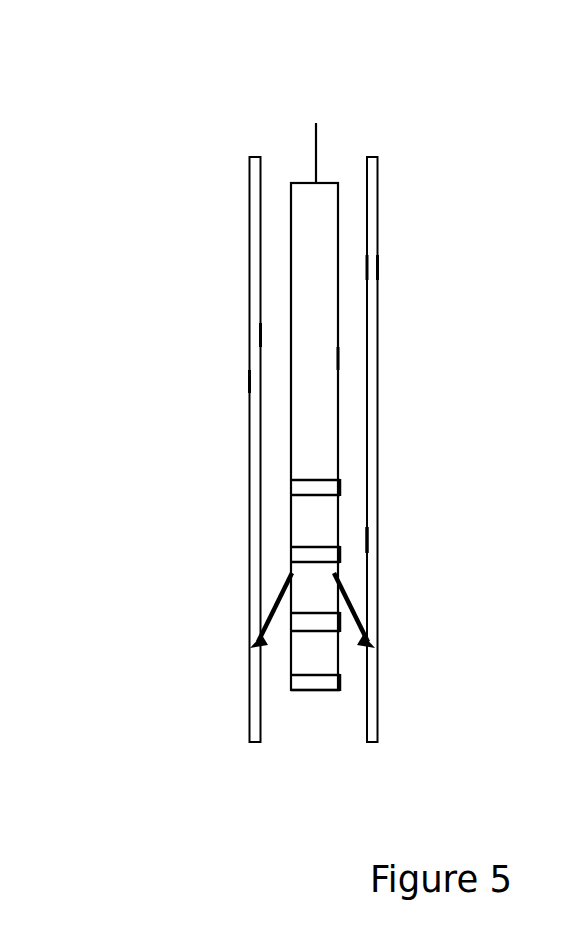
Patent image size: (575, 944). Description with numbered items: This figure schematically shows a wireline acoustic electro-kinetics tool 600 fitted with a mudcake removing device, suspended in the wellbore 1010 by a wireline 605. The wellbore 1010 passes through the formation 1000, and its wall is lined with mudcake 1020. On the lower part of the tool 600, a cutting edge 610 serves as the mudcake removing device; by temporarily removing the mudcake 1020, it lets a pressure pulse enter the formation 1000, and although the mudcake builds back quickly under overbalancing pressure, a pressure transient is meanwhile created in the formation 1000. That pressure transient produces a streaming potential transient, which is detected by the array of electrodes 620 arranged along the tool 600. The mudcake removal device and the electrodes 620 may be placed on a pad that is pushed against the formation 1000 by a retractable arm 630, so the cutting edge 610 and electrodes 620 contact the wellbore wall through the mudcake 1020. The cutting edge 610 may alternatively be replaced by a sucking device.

The downhole tool body 600 is at (339, 135).
The wireline 605 is at (296, 145).
The cutting edge 610 is at (374, 658).
The array of electrodes 620 is at (276, 492).
The retractable arm 630 is at (356, 610).
The formation 1000 is at (506, 404).
The wellbore 1010 is at (323, 742).
The mudcake 1020 is at (374, 167).